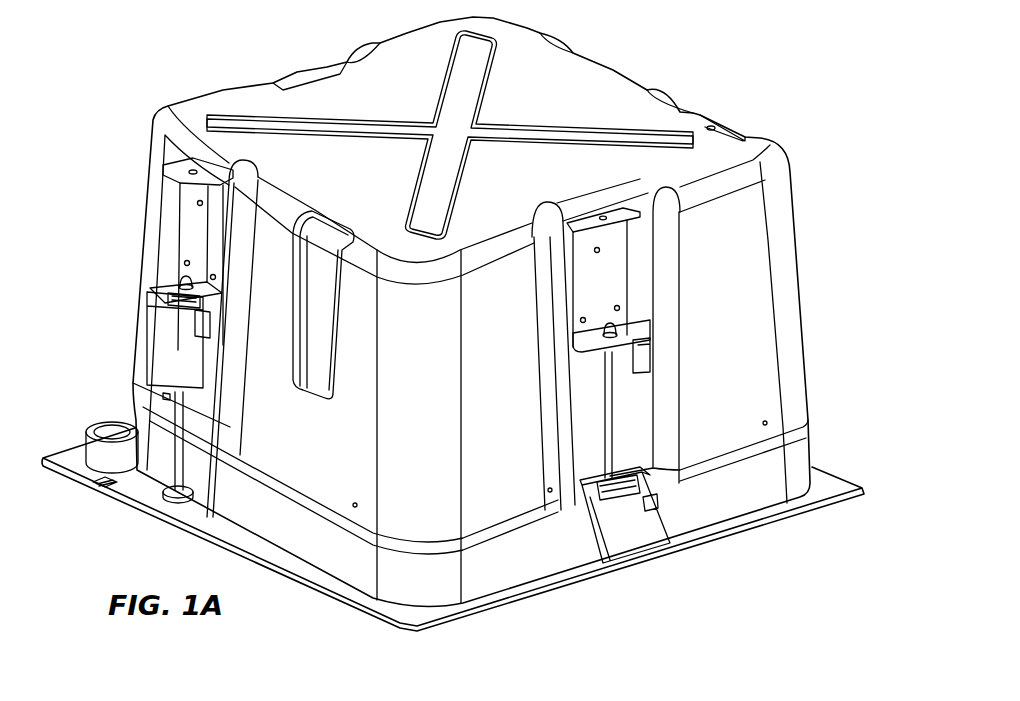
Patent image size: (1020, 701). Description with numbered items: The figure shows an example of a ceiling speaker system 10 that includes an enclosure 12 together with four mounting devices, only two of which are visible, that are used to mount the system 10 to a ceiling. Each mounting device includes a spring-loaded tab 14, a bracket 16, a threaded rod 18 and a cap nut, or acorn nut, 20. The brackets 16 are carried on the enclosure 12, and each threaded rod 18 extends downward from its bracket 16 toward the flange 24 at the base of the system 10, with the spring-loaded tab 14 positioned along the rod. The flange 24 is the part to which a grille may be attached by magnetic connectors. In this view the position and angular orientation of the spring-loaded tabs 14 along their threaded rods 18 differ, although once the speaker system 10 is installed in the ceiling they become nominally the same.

The ceiling speaker system 10 is at (776, 67).
The enclosure 12 is at (790, 285).
The spring-loaded tab 14 is at (216, 346).
The bracket 16 is at (177, 233).
The threaded rod 18 is at (180, 417).
The cap nut 20 is at (187, 279).
The flange 24 is at (830, 478).